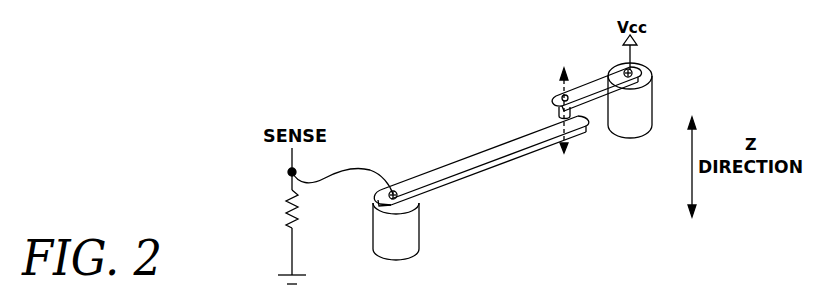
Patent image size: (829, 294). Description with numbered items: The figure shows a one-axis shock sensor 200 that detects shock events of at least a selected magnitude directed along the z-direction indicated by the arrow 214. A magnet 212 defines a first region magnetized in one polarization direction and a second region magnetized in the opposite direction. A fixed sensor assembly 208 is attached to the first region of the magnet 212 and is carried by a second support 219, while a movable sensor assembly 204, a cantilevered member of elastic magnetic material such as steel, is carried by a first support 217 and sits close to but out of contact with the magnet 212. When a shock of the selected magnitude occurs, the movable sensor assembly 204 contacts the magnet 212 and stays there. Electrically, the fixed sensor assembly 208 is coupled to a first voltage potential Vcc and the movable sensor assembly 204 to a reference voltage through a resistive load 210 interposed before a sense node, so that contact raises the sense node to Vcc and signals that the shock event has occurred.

The shock sensor 200 is at (727, 84).
The movable sensor assembly 204 is at (446, 172).
The fixed sensor assembly 208 is at (605, 83).
The resistive load 210 is at (288, 204).
The magnet 212 is at (557, 117).
The arrow 214 is at (568, 157).
The first support 217 is at (403, 237).
The second support 219 is at (633, 120).